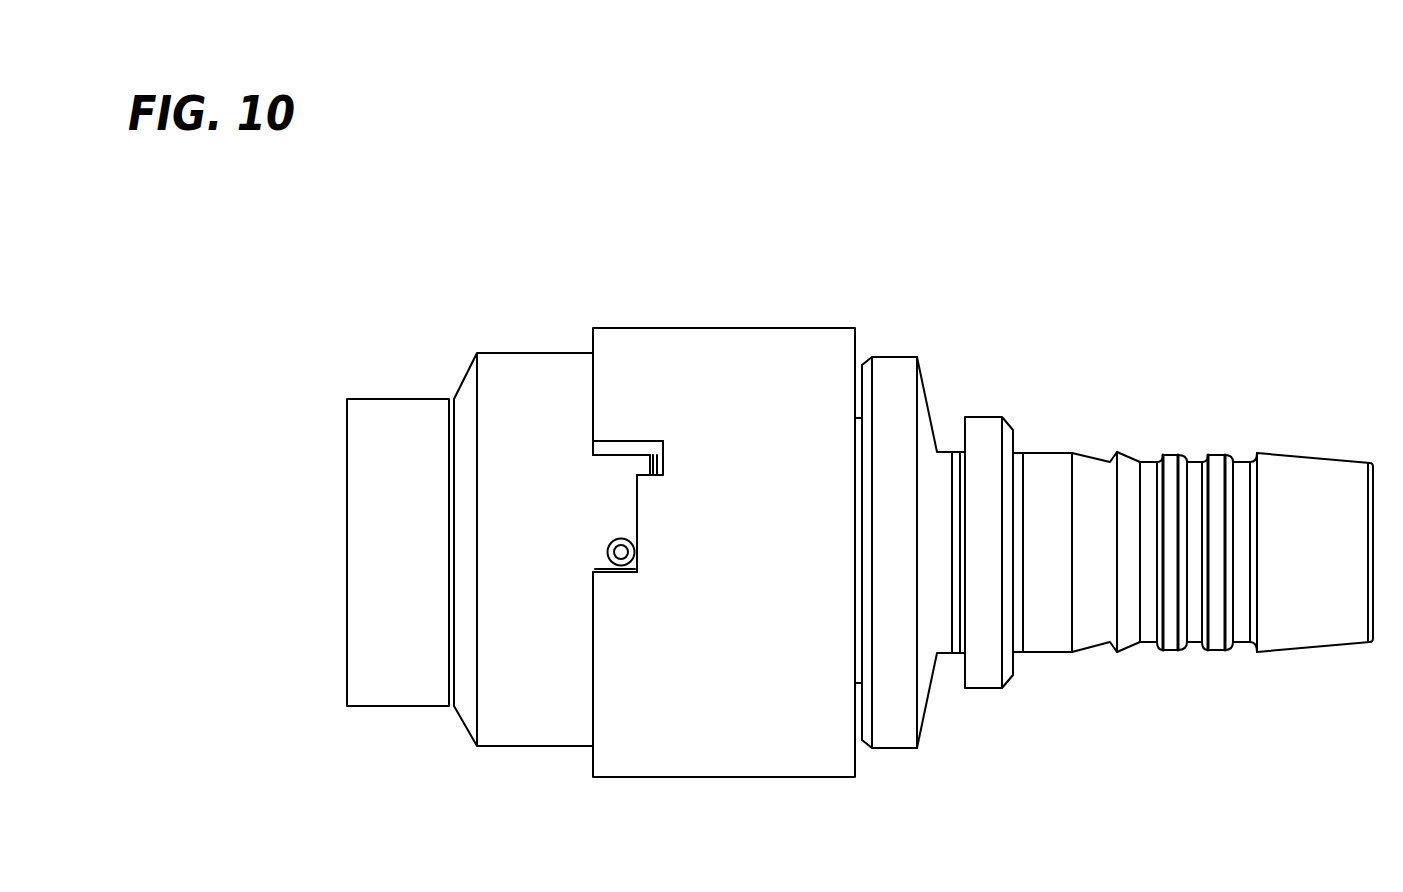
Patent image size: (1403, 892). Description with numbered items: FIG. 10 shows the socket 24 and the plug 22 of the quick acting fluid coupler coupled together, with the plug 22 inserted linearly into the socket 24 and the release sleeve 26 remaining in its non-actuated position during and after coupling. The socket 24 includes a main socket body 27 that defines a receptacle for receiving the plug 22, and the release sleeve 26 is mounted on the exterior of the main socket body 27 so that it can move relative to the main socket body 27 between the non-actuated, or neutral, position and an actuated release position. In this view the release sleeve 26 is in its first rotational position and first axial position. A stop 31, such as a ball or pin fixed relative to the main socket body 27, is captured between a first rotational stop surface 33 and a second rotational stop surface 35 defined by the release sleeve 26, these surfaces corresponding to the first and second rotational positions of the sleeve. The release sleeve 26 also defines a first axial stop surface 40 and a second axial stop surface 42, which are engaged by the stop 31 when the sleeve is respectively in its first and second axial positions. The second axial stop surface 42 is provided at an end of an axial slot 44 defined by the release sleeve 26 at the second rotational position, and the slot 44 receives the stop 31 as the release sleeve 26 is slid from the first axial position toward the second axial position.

The plug 22 is at (1092, 457).
The socket 24 is at (508, 353).
The release sleeve 26 is at (708, 328).
The main socket body 27 is at (398, 398).
The stop 31 is at (608, 543).
The first rotational stop surface 33 is at (602, 568).
The second rotational stop surface 35 is at (620, 447).
The first axial stop surface 40 is at (637, 505).
The second axial stop surface 42 is at (665, 458).
The axial slot 44 is at (663, 441).